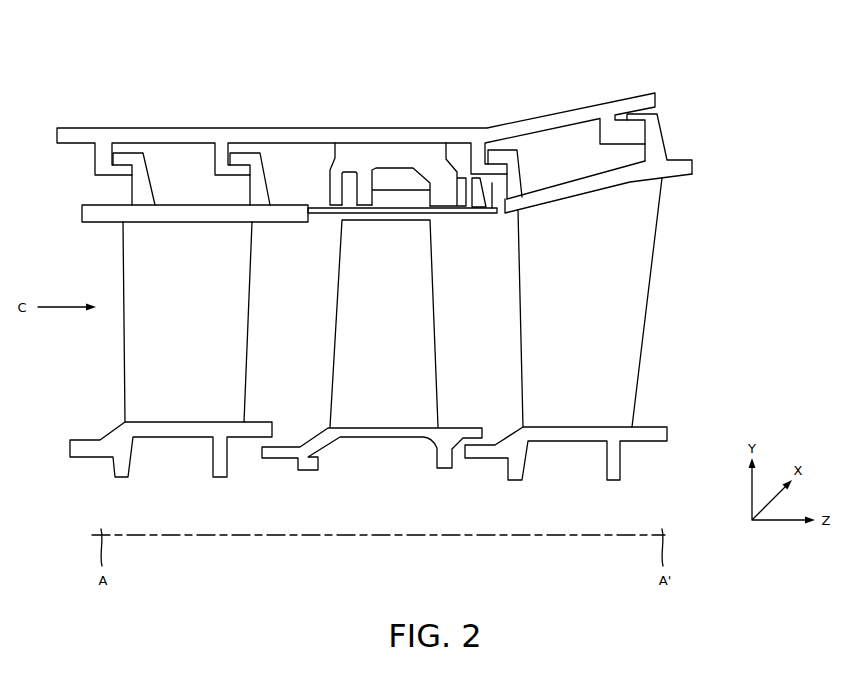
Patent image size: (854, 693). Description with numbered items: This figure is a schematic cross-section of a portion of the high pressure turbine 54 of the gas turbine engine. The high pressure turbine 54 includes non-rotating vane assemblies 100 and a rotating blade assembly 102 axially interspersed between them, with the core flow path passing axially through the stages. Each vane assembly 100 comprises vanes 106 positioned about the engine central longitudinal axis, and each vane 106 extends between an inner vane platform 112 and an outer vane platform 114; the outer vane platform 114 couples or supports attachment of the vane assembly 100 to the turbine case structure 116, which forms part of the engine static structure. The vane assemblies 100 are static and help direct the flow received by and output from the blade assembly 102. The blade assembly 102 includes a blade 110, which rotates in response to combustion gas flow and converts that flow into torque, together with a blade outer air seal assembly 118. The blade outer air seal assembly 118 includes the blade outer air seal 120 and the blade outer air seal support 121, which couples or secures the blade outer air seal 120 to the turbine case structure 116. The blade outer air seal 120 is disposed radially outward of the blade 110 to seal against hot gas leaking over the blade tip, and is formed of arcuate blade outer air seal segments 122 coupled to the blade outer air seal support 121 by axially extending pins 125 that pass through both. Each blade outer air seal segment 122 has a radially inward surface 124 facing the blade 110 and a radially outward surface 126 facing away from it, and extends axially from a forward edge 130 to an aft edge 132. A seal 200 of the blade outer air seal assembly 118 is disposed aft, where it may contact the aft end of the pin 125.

The high pressure turbine 54 is at (168, 66).
The vane assembly 100 is at (88, 244).
The blade assembly 102 is at (316, 325).
The vane 106 is at (158, 331).
The blade 110 is at (360, 339).
The inner vane platform 112 is at (258, 430).
The outer vane platform 114 is at (190, 207).
The turbine case structure 116 is at (240, 135).
The blade outer air seal assembly 118 is at (312, 154).
The blade outer air seal 120 is at (441, 230).
The blade outer air seal support 121 is at (378, 150).
The blade outer air seal segment 122 is at (480, 210).
The radially inward surface 124 is at (325, 215).
The pin 125 is at (396, 192).
The radially outward surface 126 is at (322, 208).
The forward edge 130 is at (305, 210).
The aft edge 132 is at (494, 212).
The seal 200 is at (495, 185).